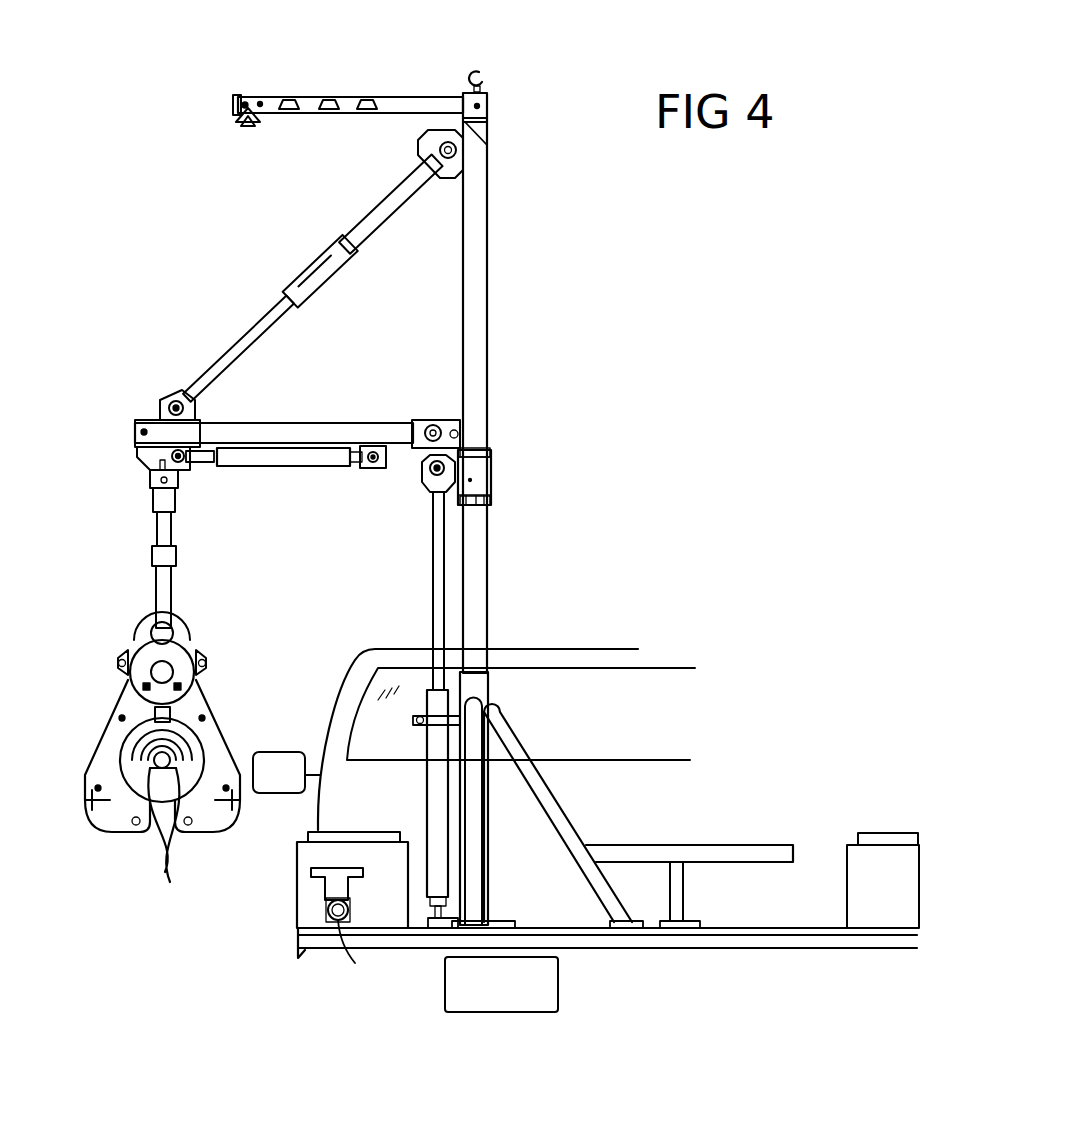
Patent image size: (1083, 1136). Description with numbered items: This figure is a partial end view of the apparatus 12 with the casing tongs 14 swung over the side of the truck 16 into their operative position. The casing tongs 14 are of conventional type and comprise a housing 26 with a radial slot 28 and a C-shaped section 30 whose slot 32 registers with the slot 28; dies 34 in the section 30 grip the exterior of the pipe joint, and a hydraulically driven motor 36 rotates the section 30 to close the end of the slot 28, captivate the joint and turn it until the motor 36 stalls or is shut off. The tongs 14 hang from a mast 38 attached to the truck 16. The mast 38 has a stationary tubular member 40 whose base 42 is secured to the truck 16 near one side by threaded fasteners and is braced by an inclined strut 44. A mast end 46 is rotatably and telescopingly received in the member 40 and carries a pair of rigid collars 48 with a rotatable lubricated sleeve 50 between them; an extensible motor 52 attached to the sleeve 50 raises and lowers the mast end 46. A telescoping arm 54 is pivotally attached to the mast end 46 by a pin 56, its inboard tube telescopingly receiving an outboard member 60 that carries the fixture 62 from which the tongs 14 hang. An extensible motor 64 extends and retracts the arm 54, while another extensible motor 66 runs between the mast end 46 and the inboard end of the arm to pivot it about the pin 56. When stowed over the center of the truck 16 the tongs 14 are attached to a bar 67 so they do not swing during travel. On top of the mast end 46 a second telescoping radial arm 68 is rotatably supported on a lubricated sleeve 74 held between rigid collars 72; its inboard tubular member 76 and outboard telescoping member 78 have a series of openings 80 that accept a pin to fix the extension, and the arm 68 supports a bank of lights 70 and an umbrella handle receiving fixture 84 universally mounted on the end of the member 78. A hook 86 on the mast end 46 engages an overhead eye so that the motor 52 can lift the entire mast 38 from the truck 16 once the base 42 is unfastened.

The apparatus 12 is at (642, 345).
The casing tongs 14 is at (268, 675).
The truck 16 is at (655, 648).
The housing 26 is at (210, 735).
The radial slot 28 is at (174, 848).
The C-shaped section 30 is at (183, 762).
The slot 32 is at (156, 848).
The dies 34 is at (150, 750).
The motor 36 is at (180, 655).
The mast 38 is at (505, 428).
The stationary tubular member 40 is at (488, 872).
The base 42 is at (503, 922).
The inclined struts 44 is at (552, 813).
The mast end 46 is at (480, 550).
The rigid collars 48 is at (478, 452).
The rotatable lubricated sleeve 50 is at (488, 478).
The extensible motor 52 is at (425, 768).
The telescoping arm 54 is at (318, 420).
The pin 56 is at (428, 422).
The outboard member 60 is at (135, 432).
The fixture 62 is at (150, 455).
The extensible motor 64 is at (312, 470).
The extensible motor 66 is at (312, 272).
The bar 67 is at (760, 847).
The second telescoping radial arm 68 is at (370, 98).
The bank of lights 70 is at (289, 98).
The rigid collars 72 is at (487, 95).
The rotatable lubricated sleeve 74 is at (488, 106).
The inboard tubular member 76 is at (428, 100).
The outboard telescoping member 78 is at (238, 98).
The openings 80 is at (262, 100).
The umbrella handle receiving fixture 84 is at (250, 135).
The hook 86 is at (480, 72).